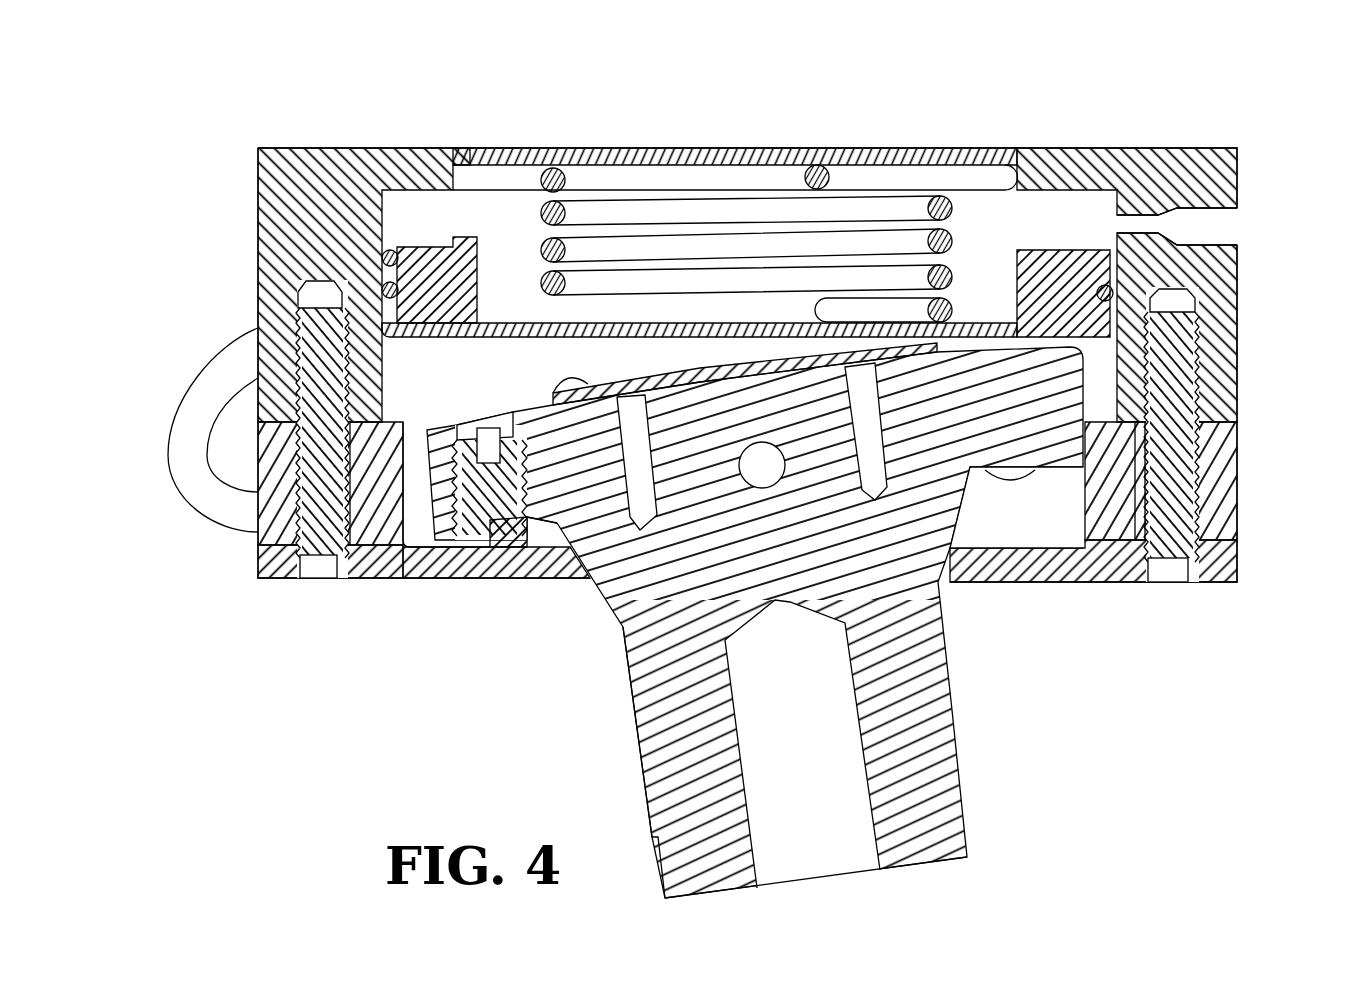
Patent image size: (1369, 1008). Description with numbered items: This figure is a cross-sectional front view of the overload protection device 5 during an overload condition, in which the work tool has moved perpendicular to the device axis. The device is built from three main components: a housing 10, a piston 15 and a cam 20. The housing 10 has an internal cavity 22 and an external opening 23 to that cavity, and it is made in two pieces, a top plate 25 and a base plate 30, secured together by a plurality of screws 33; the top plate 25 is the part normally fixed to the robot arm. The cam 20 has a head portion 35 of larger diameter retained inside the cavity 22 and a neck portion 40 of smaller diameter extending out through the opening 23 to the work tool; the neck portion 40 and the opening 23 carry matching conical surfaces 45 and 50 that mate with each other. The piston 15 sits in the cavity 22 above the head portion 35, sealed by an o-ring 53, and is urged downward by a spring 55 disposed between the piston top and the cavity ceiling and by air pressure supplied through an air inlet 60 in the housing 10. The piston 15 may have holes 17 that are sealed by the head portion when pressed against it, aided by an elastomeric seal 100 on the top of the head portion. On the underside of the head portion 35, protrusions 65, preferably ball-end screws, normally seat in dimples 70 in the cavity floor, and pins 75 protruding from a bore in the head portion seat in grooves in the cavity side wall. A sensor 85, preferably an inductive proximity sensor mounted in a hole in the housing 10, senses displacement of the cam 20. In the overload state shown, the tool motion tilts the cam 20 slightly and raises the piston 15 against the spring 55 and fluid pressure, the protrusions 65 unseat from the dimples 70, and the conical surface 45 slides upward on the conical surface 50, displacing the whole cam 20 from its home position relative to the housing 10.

The overload protection device 5 is at (285, 103).
The housing 10 is at (1268, 438).
The piston 15 is at (1065, 245).
The holes 17 is at (570, 337).
The cam 20 is at (735, 626).
The internal cavity 22 is at (443, 200).
The external opening 23 is at (567, 565).
The top plate 25 is at (1160, 165).
The base plate 30 is at (1003, 580).
The screws 33 is at (262, 580).
The head portion 35 is at (1085, 390).
The neck portion 40 is at (955, 705).
The conical surface 45 is at (617, 762).
The conical surface 50 is at (952, 565).
The o-ring 53 is at (390, 250).
The spring 55 is at (640, 165).
The air inlet 60 is at (1228, 205).
The protrusions 65 is at (482, 547).
The dimples 70 is at (430, 545).
The pins 75 is at (758, 472).
The sensor 85 is at (228, 518).
The seal 100 is at (552, 384).